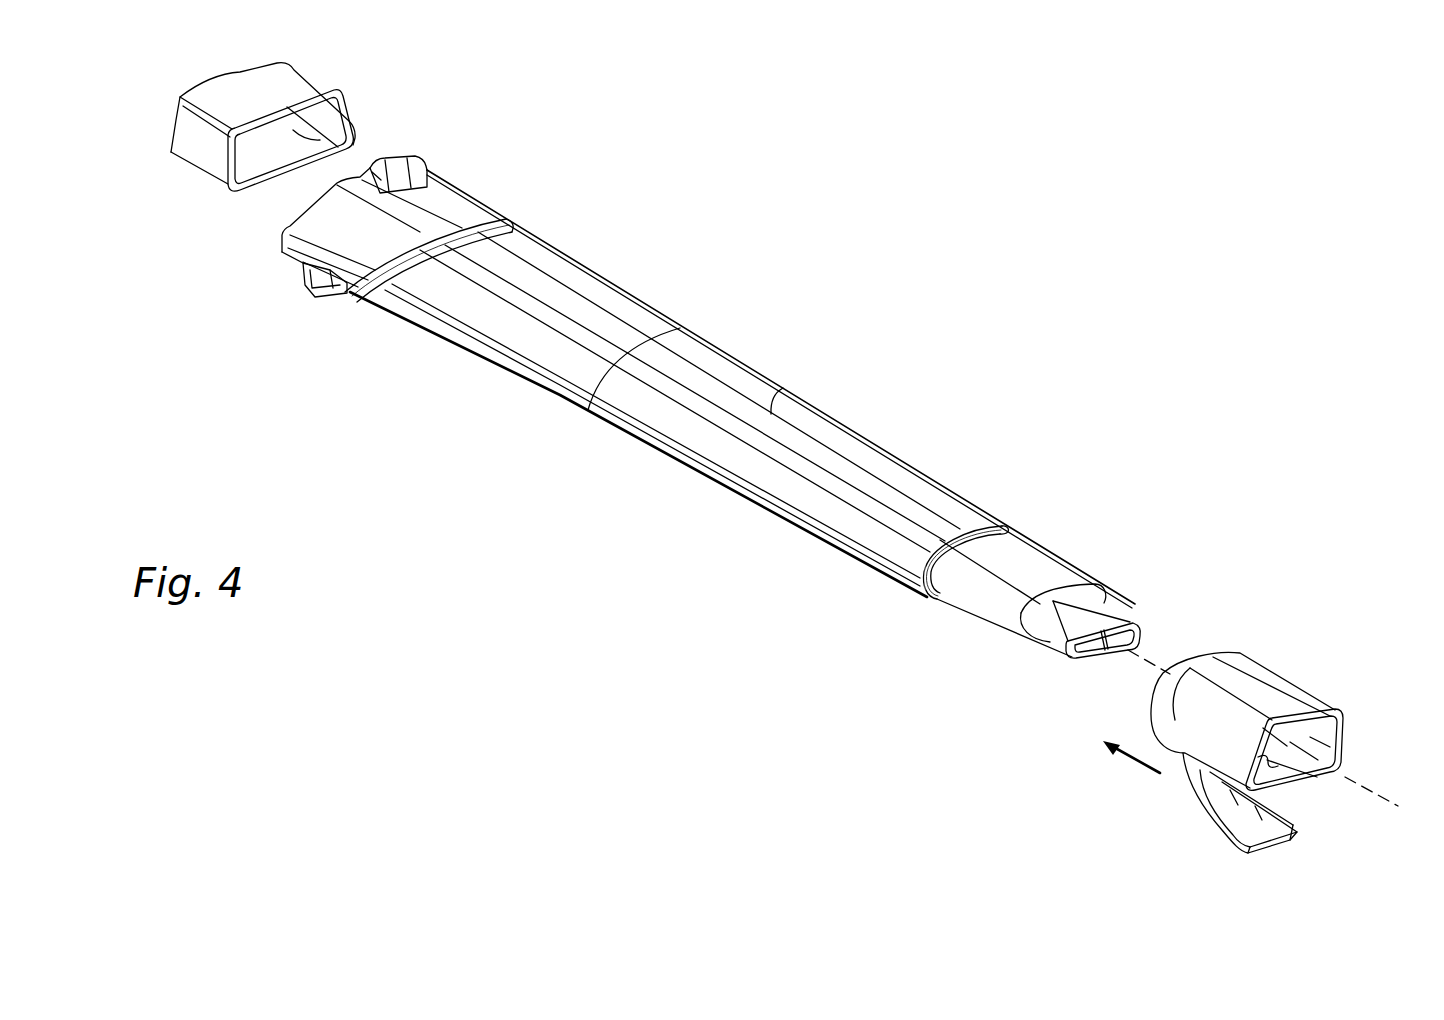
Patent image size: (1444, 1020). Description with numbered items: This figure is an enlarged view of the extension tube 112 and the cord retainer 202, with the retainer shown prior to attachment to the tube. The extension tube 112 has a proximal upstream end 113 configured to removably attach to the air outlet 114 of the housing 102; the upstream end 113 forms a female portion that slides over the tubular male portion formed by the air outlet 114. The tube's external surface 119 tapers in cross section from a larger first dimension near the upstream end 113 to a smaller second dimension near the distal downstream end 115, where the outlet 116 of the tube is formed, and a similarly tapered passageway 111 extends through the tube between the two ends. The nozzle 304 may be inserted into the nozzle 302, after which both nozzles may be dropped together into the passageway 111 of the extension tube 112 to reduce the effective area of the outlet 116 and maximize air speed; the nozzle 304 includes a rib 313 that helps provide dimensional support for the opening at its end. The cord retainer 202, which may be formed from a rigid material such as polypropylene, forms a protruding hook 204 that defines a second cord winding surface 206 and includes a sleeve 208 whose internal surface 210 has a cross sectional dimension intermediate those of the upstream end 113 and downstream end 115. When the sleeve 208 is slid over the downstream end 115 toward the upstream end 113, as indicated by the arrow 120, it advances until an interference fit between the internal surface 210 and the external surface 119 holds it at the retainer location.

The housing 102 is at (212, 99).
The air outlet 114 is at (320, 140).
The extension tube 112 is at (650, 303).
The upstream end 113 is at (403, 293).
The external surface 119 is at (773, 413).
The outlet 116 is at (1010, 530).
The downstream end 115 is at (923, 597).
The nozzle 302 is at (987, 623).
The nozzle 304 is at (1050, 650).
The rib 313 is at (1133, 620).
The passageway 111 is at (1100, 657).
The arrow 120 is at (1127, 760).
The cord retainer 202 is at (1263, 663).
The sleeve 208 is at (1290, 695).
The internal surface 210 is at (1330, 745).
The second cord winding surface 206 is at (1287, 802).
The hook 204 is at (1227, 843).